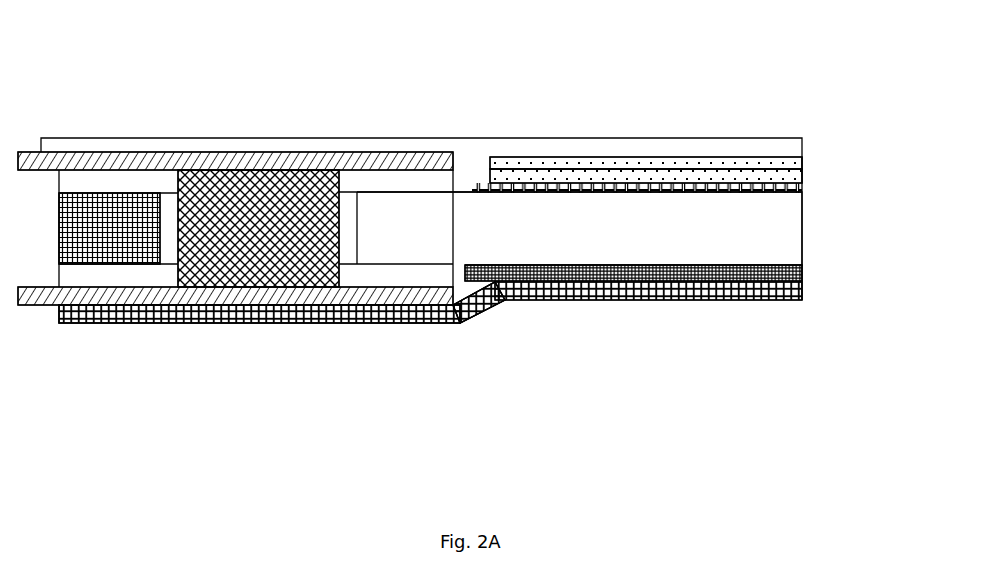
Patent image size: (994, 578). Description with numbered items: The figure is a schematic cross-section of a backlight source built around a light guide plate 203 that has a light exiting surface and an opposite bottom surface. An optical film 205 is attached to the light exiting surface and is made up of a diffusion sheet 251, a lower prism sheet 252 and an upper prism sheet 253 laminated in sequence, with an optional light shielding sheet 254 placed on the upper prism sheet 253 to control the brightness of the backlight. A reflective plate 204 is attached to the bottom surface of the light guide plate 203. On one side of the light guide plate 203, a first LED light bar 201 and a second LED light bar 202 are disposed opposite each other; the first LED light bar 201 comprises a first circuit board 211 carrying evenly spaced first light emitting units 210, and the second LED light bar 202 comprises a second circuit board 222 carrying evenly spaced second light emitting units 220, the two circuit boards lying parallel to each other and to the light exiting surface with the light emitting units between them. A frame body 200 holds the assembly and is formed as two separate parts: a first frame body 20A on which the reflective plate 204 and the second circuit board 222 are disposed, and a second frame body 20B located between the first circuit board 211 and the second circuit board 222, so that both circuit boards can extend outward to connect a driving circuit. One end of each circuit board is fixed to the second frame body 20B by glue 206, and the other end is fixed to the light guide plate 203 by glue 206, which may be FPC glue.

The frame body 200 is at (542, 300).
The first frame body 20A is at (452, 313).
The second frame body 20B is at (63, 245).
The first LED light bar 201 is at (235, 156).
The first light emitting units 210 is at (287, 185).
The first circuit board 211 is at (262, 160).
The second LED light bar 202 is at (239, 366).
The second light emitting units 220 is at (236, 312).
The second circuit board 222 is at (158, 297).
The light guide plate 203 is at (798, 235).
The reflective plate 204 is at (800, 272).
The optical film 205 is at (488, 192).
The diffusion sheet 251 is at (798, 188).
The lower prism sheet 252 is at (800, 177).
The upper prism sheet 253 is at (800, 160).
The light shielding sheet 254 is at (798, 140).
The glue 206 is at (78, 185).